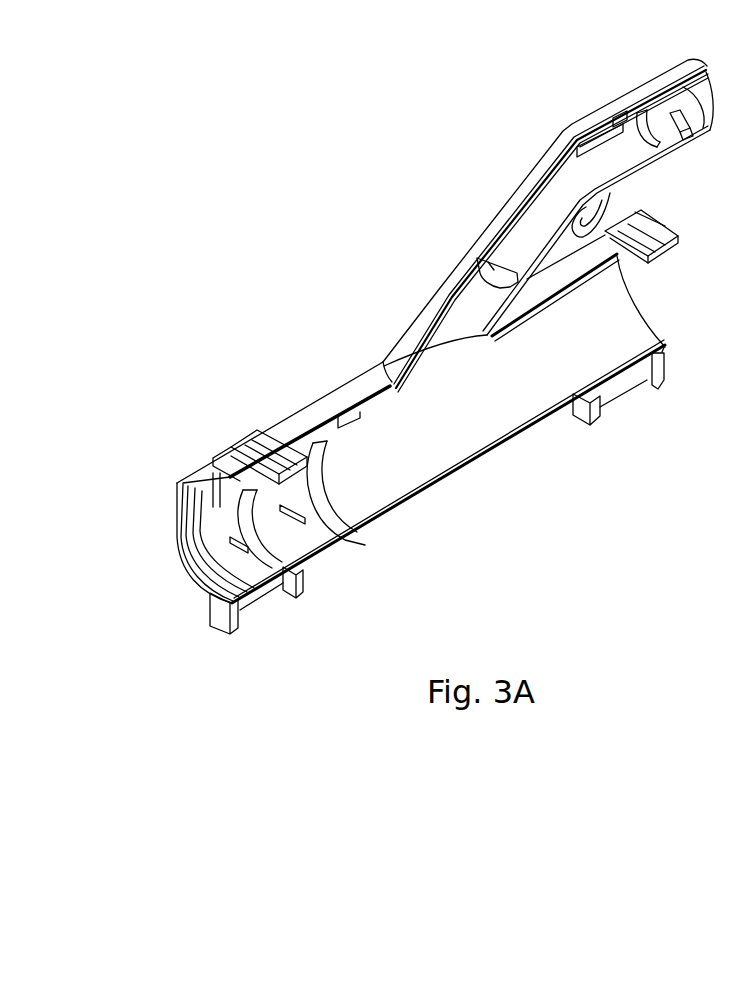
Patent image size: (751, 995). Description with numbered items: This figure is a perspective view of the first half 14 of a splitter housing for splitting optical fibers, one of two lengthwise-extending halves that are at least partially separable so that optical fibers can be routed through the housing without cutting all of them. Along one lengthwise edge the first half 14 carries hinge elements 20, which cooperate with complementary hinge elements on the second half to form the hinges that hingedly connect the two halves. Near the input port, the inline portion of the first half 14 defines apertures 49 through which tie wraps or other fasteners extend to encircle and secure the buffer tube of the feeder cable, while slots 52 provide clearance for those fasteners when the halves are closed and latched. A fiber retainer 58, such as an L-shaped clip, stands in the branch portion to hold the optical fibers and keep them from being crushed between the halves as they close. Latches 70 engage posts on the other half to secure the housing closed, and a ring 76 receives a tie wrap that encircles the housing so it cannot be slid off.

The first half 14 is at (477, 463).
The hinge element 20 is at (268, 600).
The apertures 49 is at (220, 487).
The slots 52 is at (212, 548).
The fiber retainer 58 is at (490, 262).
The latch 70 is at (270, 440).
The ring 76 is at (612, 208).